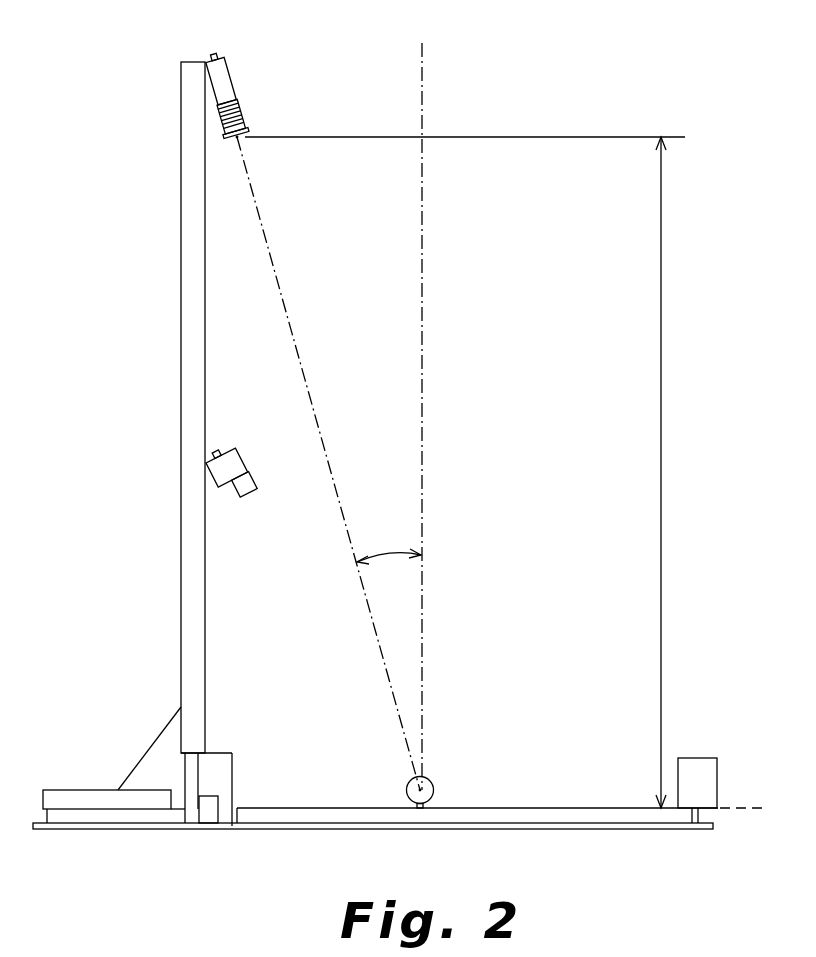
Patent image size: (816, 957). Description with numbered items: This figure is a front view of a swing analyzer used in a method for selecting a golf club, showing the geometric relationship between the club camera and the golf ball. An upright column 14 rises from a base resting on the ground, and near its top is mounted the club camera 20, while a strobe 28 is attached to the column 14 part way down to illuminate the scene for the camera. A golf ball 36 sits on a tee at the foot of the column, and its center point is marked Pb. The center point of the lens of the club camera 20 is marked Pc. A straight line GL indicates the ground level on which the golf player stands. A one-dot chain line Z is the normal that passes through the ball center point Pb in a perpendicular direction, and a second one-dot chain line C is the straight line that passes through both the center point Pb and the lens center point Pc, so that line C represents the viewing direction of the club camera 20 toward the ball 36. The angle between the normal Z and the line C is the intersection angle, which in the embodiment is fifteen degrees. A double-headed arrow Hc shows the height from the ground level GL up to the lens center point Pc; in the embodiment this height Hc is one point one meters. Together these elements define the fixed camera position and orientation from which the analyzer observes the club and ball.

The column 14 is at (195, 288).
The club camera 20 is at (221, 80).
The strobes 28 is at (220, 458).
The golf ball 36 is at (428, 778).
The center point of a lens of the club camera Pc is at (240, 139).
The center point of the golf ball Pb is at (421, 789).
The normal Z is at (424, 66).
The straight line C is at (264, 233).
The height Hc is at (466, 472).
The ground level GL is at (730, 808).